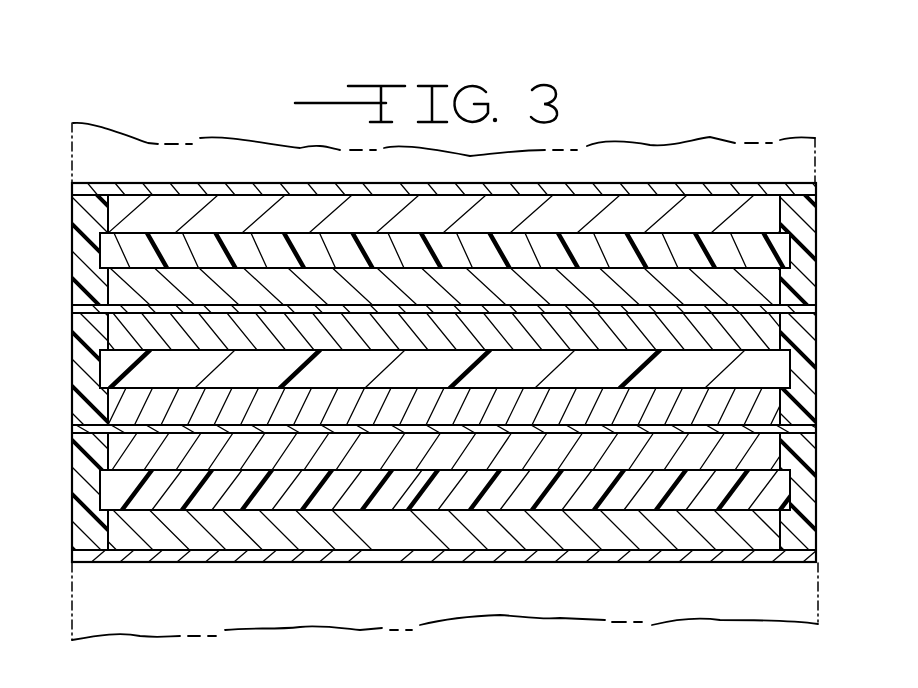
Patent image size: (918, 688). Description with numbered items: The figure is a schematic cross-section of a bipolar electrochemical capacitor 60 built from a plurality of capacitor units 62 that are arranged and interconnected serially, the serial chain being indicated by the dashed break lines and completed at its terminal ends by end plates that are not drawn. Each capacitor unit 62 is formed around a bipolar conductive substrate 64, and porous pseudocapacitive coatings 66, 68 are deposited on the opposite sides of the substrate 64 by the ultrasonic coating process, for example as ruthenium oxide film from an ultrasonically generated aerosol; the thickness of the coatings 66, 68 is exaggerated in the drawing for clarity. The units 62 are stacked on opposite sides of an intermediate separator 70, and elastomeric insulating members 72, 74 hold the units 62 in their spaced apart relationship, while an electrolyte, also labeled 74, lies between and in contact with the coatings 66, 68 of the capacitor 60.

The bipolar electrochemical capacitor 60 is at (792, 132).
The capacitor unit 62 is at (70, 350).
The bipolar conductive substrate 64 is at (645, 182).
The porous pseudocapacitive coating 66 is at (712, 205).
The porous pseudocapacitive coating 68 is at (590, 278).
The intermediate separator 70 is at (805, 212).
The elastomeric insulating member 72 is at (820, 192).
The elastomeric insulating member 74 is at (84, 229).